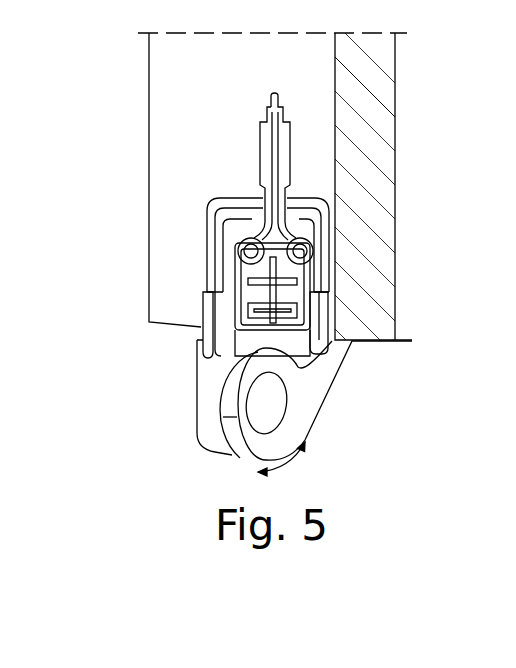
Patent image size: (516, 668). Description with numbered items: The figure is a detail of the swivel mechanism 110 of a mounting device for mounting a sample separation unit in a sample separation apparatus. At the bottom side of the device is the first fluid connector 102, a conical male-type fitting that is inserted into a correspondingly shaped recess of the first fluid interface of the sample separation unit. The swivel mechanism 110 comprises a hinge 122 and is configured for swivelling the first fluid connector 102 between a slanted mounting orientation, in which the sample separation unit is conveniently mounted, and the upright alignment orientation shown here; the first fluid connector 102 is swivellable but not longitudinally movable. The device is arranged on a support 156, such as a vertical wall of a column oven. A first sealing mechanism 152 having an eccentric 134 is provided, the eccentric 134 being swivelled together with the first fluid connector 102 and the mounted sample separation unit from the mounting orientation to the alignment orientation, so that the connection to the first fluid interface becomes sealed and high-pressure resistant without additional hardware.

The first fluid connector 102 is at (297, 118).
The swivel mechanism 110 is at (333, 413).
The hinge 122 is at (240, 402).
The eccentric 134 is at (209, 385).
The first sealing mechanism 152 is at (342, 377).
The support 156 is at (168, 106).